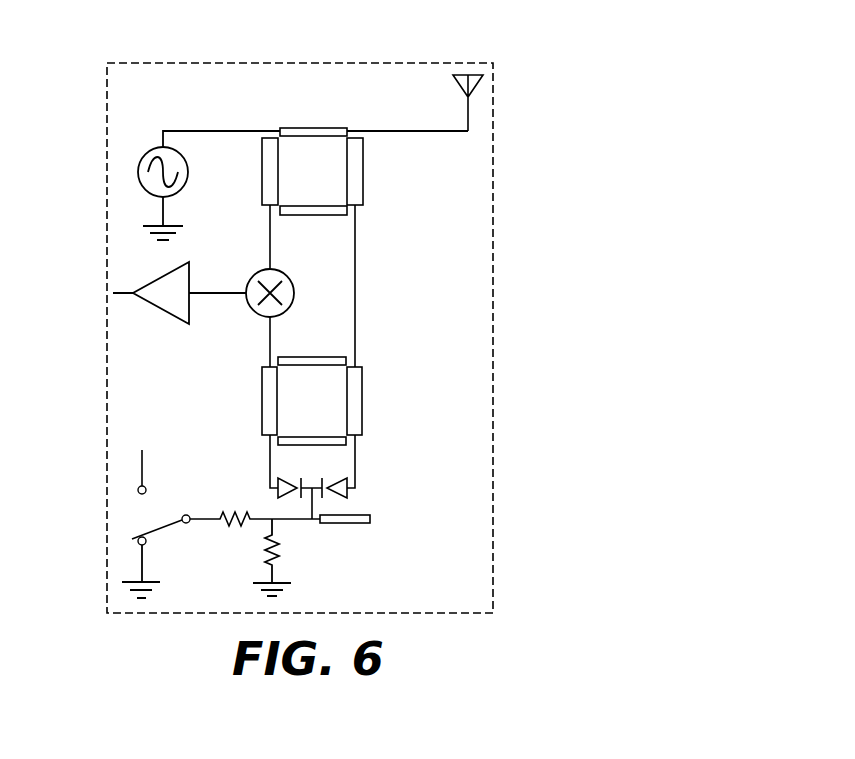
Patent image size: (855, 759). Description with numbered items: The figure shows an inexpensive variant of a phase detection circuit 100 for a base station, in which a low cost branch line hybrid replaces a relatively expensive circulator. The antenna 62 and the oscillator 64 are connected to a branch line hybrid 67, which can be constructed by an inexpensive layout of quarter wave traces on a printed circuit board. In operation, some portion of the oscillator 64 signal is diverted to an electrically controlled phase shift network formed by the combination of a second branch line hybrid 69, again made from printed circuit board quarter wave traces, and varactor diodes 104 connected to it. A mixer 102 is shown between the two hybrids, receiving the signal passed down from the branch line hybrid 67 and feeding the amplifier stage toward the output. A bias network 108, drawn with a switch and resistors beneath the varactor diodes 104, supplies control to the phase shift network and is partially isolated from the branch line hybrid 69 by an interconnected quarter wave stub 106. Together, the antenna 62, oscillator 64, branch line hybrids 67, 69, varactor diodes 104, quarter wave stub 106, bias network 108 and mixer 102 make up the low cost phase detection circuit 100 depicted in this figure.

The transceiver system 100 is at (118, 48).
The antenna 62 is at (461, 88).
The oscillator 64 is at (189, 171).
The branch line hybrid 67 is at (369, 150).
The mixer 102 is at (296, 293).
The bias network 108 is at (190, 283).
The branch line hybrid 69 is at (369, 376).
The varactor diodes 104 is at (369, 478).
The quarter wave stub 106 is at (372, 518).